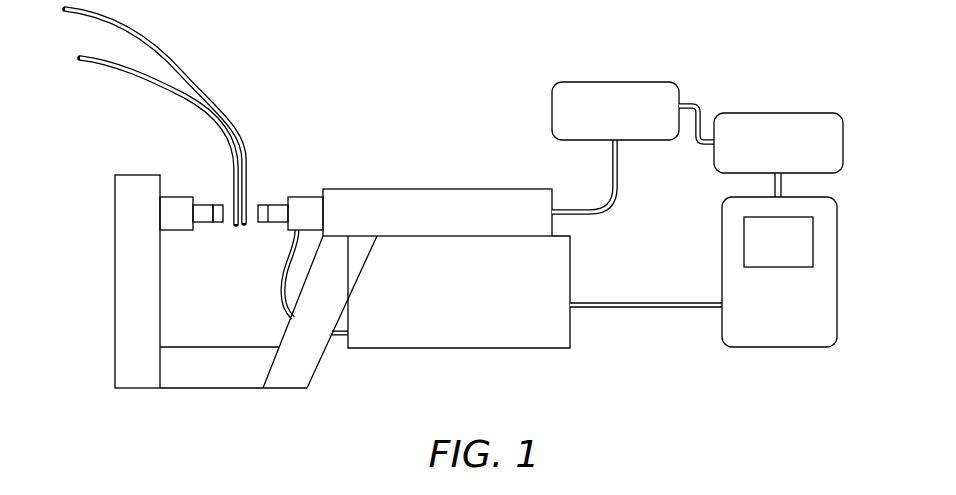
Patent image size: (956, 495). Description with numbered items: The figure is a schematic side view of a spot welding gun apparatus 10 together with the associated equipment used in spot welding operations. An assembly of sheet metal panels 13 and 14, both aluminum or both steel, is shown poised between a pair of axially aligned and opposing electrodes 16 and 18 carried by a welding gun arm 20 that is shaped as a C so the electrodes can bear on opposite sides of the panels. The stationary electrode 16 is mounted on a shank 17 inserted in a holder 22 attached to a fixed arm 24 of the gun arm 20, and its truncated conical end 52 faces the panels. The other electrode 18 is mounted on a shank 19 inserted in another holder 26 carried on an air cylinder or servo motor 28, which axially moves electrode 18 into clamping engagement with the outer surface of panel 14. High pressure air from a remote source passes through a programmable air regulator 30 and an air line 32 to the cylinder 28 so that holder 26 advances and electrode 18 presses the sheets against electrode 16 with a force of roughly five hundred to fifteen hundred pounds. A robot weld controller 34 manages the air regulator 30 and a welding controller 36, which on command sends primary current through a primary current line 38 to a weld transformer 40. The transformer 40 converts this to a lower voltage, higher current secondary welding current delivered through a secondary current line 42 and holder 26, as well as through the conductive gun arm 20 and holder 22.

The spot welding gun apparatus 10 is at (429, 219).
The sheet metal panel 13 is at (135, 77).
The sheet metal panel 14 is at (168, 50).
The electrode 16 is at (215, 235).
The shank 17 is at (202, 210).
The electrode 18 is at (262, 200).
The shank 19 is at (275, 203).
The welding gun arm 20 is at (217, 373).
The holder 22 is at (172, 213).
The fixed arm 24 is at (123, 268).
The holder 26 is at (305, 197).
The air cylinder or servo motor 28 is at (442, 208).
The programmable air regulator 30 is at (618, 90).
The air line 32 is at (610, 210).
The robot weld controller 34 is at (773, 123).
The welding controller 36 is at (779, 272).
The primary current line 38 is at (627, 307).
The weld transformer 40 is at (465, 333).
The secondary current line 42 is at (280, 292).
The truncated conical end 52 is at (222, 204).